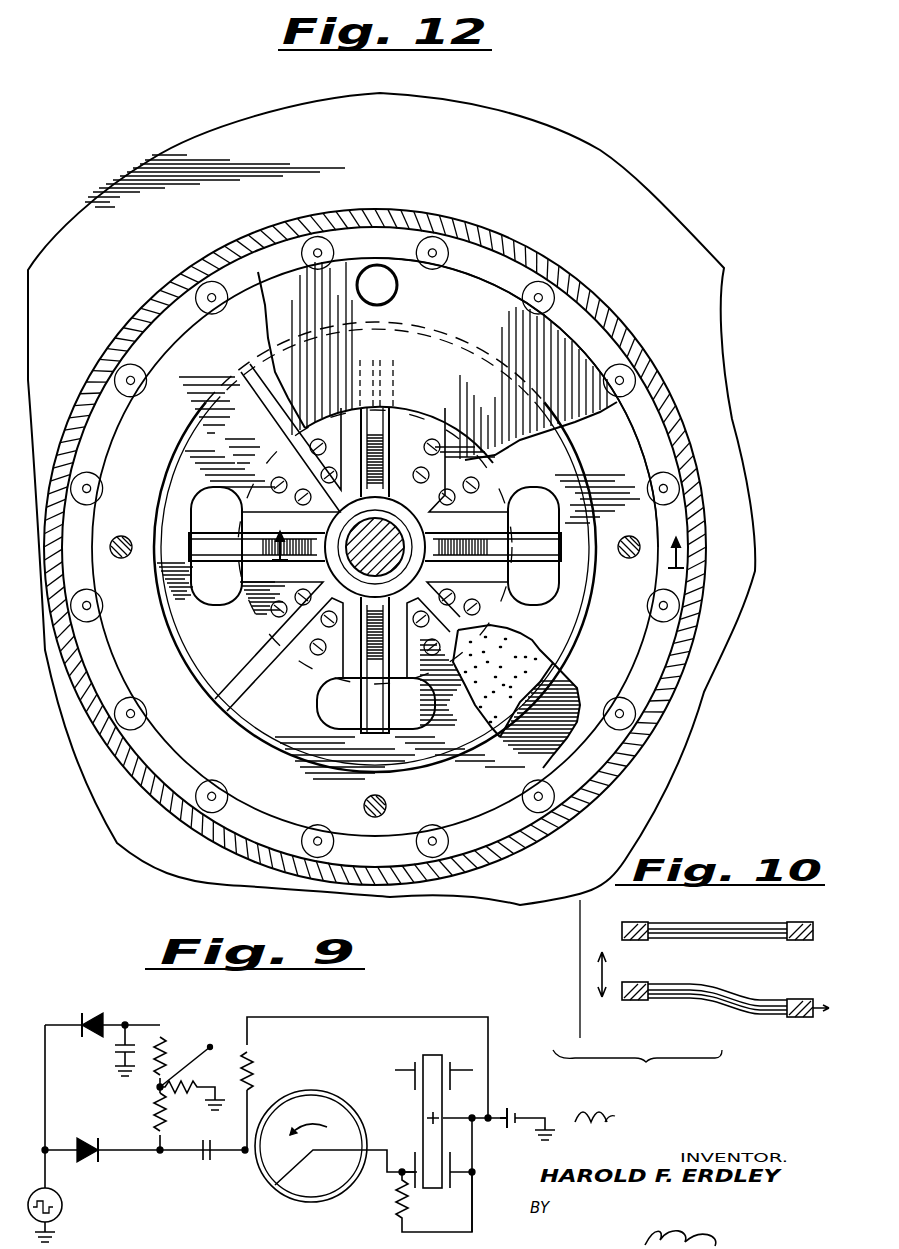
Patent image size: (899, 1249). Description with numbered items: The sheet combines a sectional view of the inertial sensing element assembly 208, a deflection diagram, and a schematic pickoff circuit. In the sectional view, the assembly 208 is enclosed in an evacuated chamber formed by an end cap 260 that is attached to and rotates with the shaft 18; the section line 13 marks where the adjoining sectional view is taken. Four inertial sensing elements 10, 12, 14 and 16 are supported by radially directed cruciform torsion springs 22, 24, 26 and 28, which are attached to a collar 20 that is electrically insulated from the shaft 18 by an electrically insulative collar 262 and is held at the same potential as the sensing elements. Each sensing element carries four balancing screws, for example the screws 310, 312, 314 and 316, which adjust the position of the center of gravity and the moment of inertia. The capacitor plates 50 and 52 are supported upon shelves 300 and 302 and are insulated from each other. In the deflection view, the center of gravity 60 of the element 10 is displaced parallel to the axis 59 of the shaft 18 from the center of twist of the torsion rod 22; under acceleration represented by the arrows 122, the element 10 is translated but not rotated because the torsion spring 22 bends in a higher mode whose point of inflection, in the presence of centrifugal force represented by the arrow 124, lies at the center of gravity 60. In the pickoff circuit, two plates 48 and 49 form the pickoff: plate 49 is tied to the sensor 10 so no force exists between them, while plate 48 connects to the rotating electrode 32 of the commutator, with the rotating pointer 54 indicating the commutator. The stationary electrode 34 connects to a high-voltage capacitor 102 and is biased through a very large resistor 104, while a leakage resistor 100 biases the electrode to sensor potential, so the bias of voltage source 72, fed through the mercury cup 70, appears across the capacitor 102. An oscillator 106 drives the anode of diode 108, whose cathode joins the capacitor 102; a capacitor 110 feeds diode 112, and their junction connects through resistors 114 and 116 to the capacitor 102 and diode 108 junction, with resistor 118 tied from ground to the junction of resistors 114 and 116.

In FIG. 12, the inertial sensing element 10 is at (560, 604).
In FIG. 10, the inertial sensing element 10 is at (798, 928).
In FIG. 9, the inertial sensing element 10 is at (430, 1055).
In FIG. 12, the inertial sensing element 12 is at (345, 661).
In FIG. 12, the section line 13 is at (492, 537).
In FIG. 12, the inertial sensing element 14 is at (267, 535).
In FIG. 12, the inertial sensing element 16 is at (379, 490).
In FIG. 12, the shaft 18 is at (394, 546).
In FIG. 12, the collar 20 is at (261, 558).
In FIG. 10, the collar 20 is at (636, 924).
In FIG. 12, the torsion spring 22 is at (521, 541).
In FIG. 10, the torsion spring 22 is at (694, 926).
In FIG. 9, the torsion spring 22 is at (440, 1125).
In FIG. 12, the torsion rod 24 is at (376, 703).
In FIG. 12, the torsion rod 26 is at (216, 546).
In FIG. 12, the torsion element 28 is at (395, 383).
In FIG. 9, the rotating electrode 32 is at (306, 1200).
In FIG. 9, the stationary electrode 34 is at (326, 1202).
In FIG. 9, the pickoff plate 48 is at (415, 1166).
In FIG. 9, the pickoff plate 49 is at (455, 1184).
In FIG. 9, the capacitor plate 50 is at (412, 1066).
In FIG. 9, the capacitor plate 52 is at (453, 1066).
In FIG. 9, the pointer / coil 54 is at (318, 1123).
In FIG. 10, the axis 59 is at (580, 930).
In FIG. 9, the axis 59 is at (618, 1116).
In FIG. 10, the center of gravity 60 is at (752, 930).
In FIG. 9, the mercury cup 70 is at (490, 1113).
In FIG. 9, the voltage source 72 is at (518, 1110).
In FIG. 9, the leakage resistor 100 is at (396, 1208).
In FIG. 9, the capacitor 102 is at (207, 1165).
In FIG. 9, the resistor 104 is at (251, 1062).
In FIG. 9, the oscillator 106 is at (62, 1208).
In FIG. 9, the diode 108 is at (88, 1162).
In FIG. 9, the capacitor 110 is at (105, 1046).
In FIG. 9, the diode 112 is at (86, 1014).
In FIG. 9, the resistor 114 is at (163, 1052).
In FIG. 9, the resistor 116 is at (157, 1118).
In FIG. 9, the resistor 118 is at (184, 1086).
In FIG. 10, the arrows 122 is at (596, 977).
In FIG. 10, the arrow 124 is at (818, 1012).
In FIG. 12, the inertial sensing element assembly 208 is at (592, 322).
In FIG. 12, the end cap 260 is at (685, 680).
In FIG. 12, the electrically insulative collar 262 is at (399, 547).
In FIG. 12, the shelf 300 is at (375, 362).
In FIG. 12, the shelf 302 is at (516, 689).
In FIG. 12, the balancing screw 310 is at (408, 389).
In FIG. 12, the balancing screw 312 is at (538, 394).
In FIG. 12, the balancing screw 314 is at (496, 582).
In FIG. 12, the balancing screw 316 is at (508, 596).